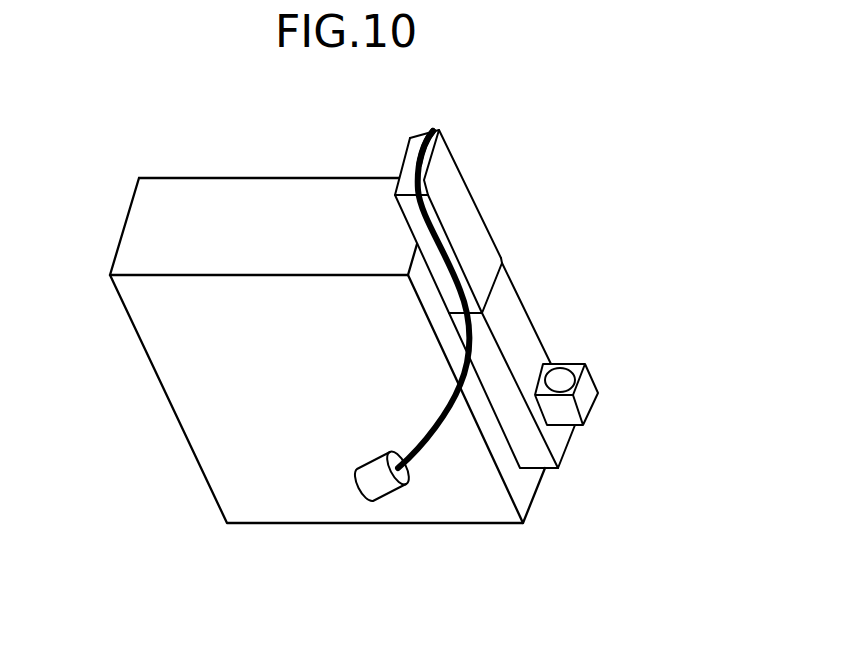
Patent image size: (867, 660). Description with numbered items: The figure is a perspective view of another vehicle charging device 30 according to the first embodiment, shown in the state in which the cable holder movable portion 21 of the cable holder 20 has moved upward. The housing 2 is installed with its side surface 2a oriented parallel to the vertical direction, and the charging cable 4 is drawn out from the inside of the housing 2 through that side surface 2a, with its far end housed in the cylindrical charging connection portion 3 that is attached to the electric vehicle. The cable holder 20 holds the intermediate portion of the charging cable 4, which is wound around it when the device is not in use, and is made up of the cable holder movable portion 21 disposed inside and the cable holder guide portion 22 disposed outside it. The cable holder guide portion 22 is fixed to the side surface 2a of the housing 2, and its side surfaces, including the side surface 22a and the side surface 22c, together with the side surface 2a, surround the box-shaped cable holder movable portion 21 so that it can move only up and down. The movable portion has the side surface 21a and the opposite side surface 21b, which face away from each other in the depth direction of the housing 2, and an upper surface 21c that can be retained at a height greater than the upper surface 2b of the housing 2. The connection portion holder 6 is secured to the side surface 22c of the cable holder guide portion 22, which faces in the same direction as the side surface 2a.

The vehicle charging device 30 is at (161, 127).
The housing 2 is at (163, 417).
The side surface of the housing 2a is at (525, 487).
The upper surface of the housing 2b is at (218, 193).
The charging connection portion 3 is at (392, 486).
The charging cable 4 is at (428, 452).
The connection portion holder 6 is at (589, 392).
The cable holder 20 is at (542, 160).
The cable holder movable portion 21 is at (485, 187).
The side surface of the cable holder movable portion 21a is at (410, 215).
The side surface of the cable holder movable portion 21b is at (417, 138).
The upper surface of the cable holder movable portion 21c is at (403, 177).
The cable holder guide portion 22 is at (537, 292).
The side surface of the cable holder guide portion 22a is at (512, 423).
The side surface of the cable holder guide portion 22c is at (523, 338).